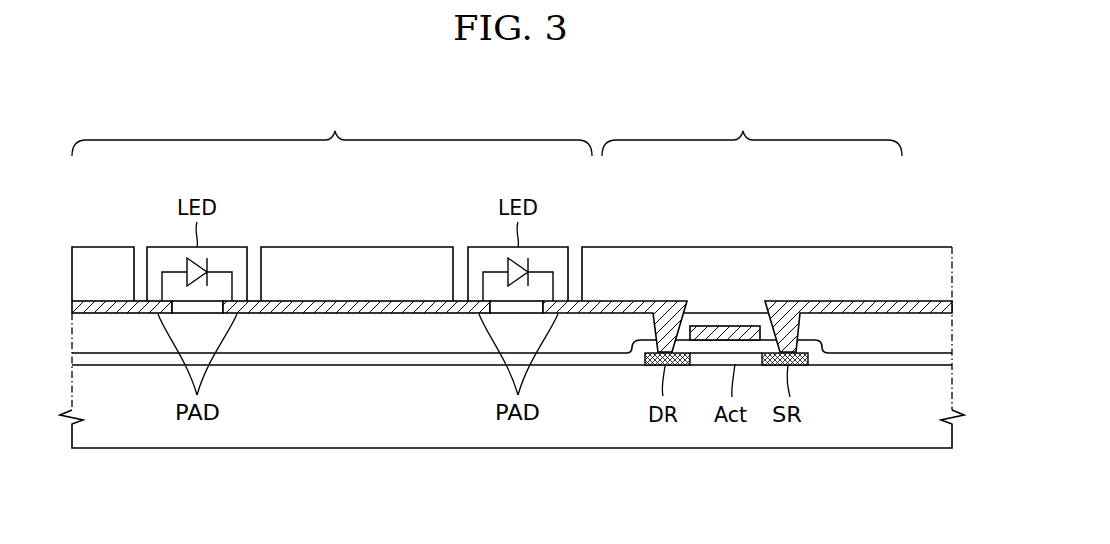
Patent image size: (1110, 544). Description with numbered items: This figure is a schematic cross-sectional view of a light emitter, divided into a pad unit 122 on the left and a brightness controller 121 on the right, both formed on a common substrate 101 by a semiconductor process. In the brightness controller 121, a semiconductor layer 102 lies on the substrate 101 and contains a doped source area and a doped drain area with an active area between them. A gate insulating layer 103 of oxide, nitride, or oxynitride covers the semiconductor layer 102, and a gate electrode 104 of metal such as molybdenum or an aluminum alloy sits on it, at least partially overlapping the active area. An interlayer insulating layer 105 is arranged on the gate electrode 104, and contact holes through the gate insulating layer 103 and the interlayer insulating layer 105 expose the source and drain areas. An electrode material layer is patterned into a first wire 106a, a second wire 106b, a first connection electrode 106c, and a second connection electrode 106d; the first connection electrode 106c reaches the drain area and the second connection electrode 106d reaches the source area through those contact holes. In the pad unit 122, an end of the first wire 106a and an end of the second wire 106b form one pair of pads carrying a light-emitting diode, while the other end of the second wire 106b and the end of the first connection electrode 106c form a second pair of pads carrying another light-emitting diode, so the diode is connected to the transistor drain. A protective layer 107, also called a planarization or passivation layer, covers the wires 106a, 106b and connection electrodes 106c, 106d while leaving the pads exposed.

The substrate 101 is at (453, 422).
The semiconductor layer 102 is at (705, 356).
The gate insulating layer 103 is at (832, 356).
The gate electrode 104 is at (728, 326).
The interlayer insulating layer 105 is at (857, 340).
The first wire 106a is at (103, 302).
The second wire 106b is at (358, 302).
The first connection electrode 106c is at (619, 302).
The second connection electrode 106d is at (860, 302).
The protective layer 107 is at (917, 258).
The brightness controller 121 is at (752, 129).
The pad unit 122 is at (332, 129).